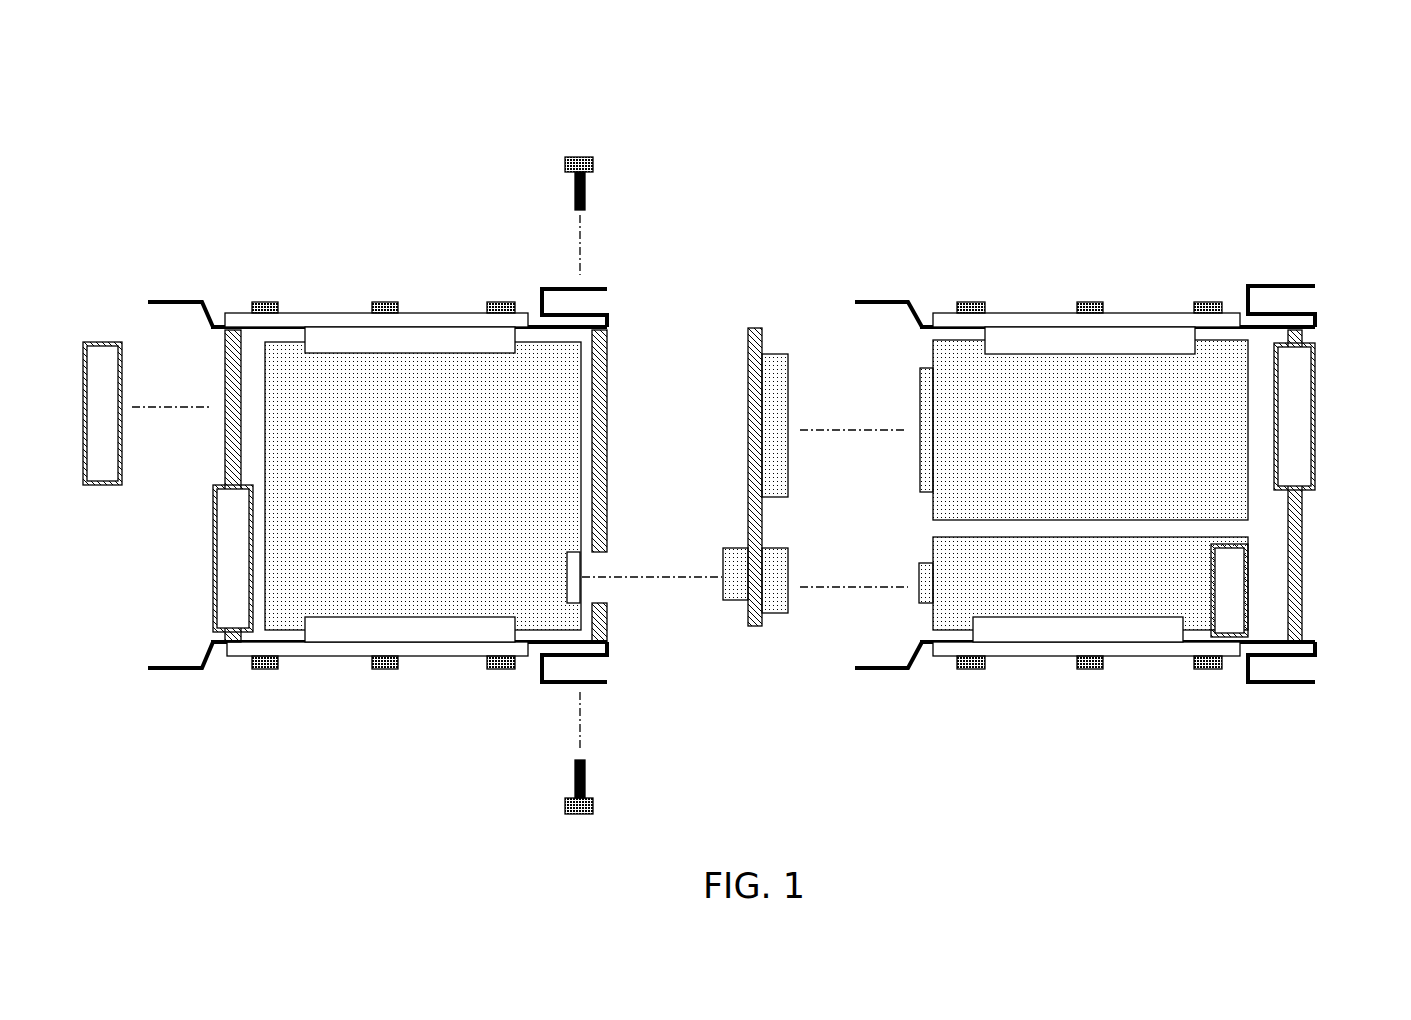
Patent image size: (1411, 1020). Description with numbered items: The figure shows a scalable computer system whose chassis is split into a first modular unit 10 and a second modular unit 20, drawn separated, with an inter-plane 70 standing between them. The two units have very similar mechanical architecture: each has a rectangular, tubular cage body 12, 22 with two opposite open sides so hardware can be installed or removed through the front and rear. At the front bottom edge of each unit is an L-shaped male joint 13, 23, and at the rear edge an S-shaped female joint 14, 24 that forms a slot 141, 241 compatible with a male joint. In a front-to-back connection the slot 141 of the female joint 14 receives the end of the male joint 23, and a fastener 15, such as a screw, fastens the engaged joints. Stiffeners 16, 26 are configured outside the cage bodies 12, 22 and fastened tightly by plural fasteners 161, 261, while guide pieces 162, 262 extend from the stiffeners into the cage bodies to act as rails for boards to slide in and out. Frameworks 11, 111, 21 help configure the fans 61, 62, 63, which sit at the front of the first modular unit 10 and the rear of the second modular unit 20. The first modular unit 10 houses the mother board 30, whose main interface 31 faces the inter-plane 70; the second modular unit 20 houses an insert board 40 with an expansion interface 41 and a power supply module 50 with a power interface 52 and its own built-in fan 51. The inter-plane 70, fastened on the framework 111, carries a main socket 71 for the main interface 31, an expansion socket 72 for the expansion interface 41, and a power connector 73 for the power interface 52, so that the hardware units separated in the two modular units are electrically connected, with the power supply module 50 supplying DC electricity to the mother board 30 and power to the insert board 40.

The first modular unit 10 is at (390, 152).
The framework 11 is at (225, 352).
The framework 111 is at (608, 348).
The first cage body 12 is at (298, 325).
The first male joint 13 is at (180, 300).
The first female joint 14 is at (545, 280).
The slot 141 is at (593, 303).
The fastener 15 is at (573, 157).
The stiffener 16 is at (428, 313).
The fastener 161 is at (375, 300).
The guide piece 162 is at (462, 345).
The mother board 30 is at (568, 450).
The main interface 31 is at (573, 550).
The fan 61 is at (102, 340).
The fan 62 is at (213, 555).
The fan 63 is at (1318, 413).
The inter-plane 70 is at (751, 326).
The main socket 71 is at (733, 546).
The expansion socket 72 is at (775, 353).
The power connector 73 is at (780, 632).
The second modular unit 20 is at (1083, 165).
The framework 21 is at (1303, 517).
The second cage body 22 is at (996, 313).
The second male joint 23 is at (882, 300).
The second female joint 24 is at (1247, 278).
The slot 241 is at (1295, 302).
The stiffener 26 is at (1134, 313).
The fastener 261 is at (1200, 300).
The guide piece 262 is at (1051, 340).
The insert board 40 is at (958, 358).
The expansion interface 41 is at (918, 385).
The power supply module 50 is at (945, 550).
The built-in fan 51 is at (1250, 590).
The power interface 52 is at (918, 598).